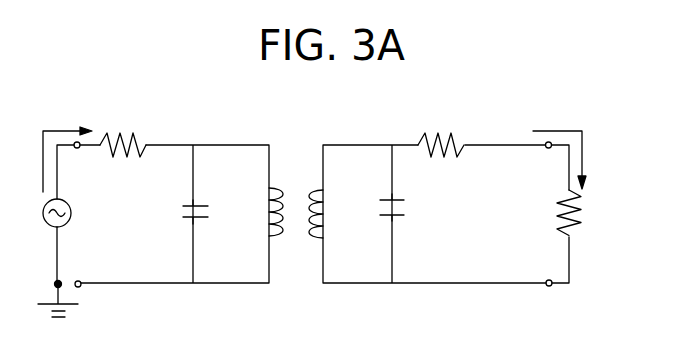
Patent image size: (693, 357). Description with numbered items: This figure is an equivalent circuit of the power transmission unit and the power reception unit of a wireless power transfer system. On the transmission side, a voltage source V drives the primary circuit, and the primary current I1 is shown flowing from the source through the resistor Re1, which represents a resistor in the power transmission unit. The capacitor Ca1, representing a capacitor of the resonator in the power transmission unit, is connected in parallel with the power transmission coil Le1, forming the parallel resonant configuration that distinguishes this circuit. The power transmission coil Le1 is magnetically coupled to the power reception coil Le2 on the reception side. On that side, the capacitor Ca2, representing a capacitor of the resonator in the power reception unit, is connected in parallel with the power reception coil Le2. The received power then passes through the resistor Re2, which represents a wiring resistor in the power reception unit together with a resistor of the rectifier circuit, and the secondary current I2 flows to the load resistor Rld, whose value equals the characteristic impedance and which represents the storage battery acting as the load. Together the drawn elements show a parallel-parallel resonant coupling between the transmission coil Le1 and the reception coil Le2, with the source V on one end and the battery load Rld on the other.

The voltage source V is at (43, 214).
The primary side current I1 is at (67, 149).
The resistor in power transmission unit Re1 is at (123, 162).
The capacitor of resonator in power transmission unit Ca1 is at (174, 213).
The power transmission coil Le1 is at (256, 212).
The power reception coil Le2 is at (337, 214).
The capacitor of resonator in power reception unit Ca2 is at (415, 210).
The wiring resistor and rectifier circuit resistor in power reception unit Re2 is at (442, 159).
The secondary side current I2 is at (559, 147).
The storage battery (load) Rld is at (613, 213).